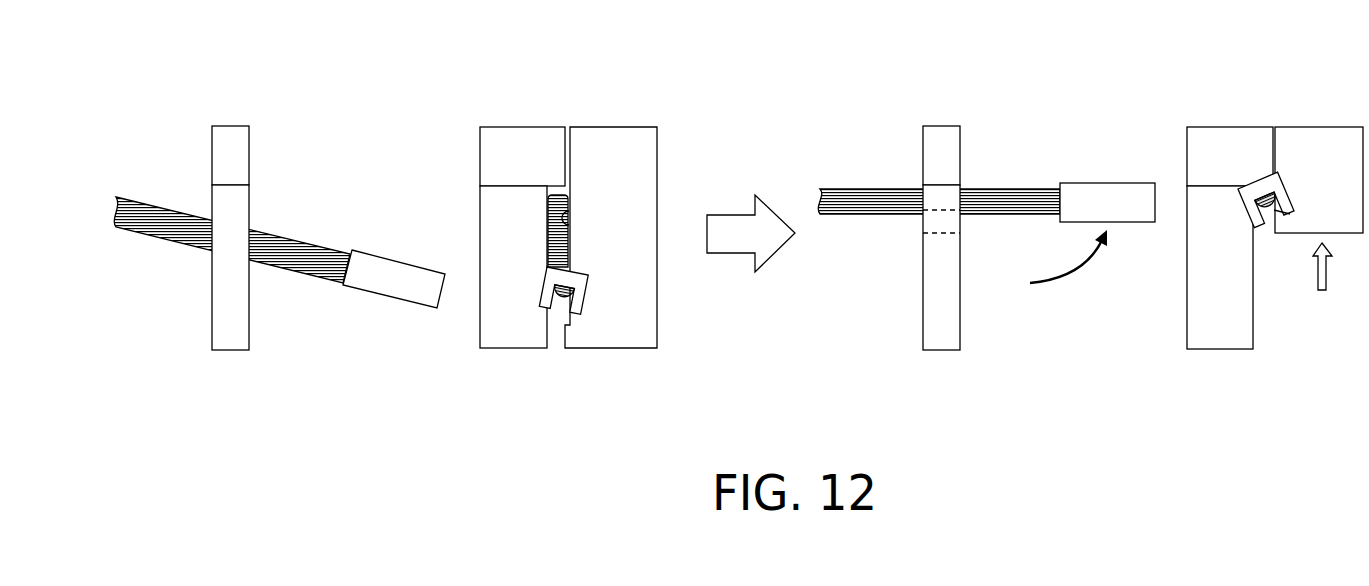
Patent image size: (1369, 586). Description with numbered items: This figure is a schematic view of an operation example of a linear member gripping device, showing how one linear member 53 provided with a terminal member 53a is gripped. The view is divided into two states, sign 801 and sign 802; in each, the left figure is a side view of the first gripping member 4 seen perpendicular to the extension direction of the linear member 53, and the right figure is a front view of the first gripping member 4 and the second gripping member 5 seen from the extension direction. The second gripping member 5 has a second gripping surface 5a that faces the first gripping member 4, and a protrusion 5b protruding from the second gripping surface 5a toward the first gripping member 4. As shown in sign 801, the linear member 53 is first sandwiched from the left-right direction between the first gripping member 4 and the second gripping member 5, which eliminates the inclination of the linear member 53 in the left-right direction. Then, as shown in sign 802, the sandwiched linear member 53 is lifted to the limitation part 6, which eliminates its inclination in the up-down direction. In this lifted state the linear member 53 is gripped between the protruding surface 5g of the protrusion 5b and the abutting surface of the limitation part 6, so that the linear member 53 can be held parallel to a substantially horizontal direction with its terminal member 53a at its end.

The sign 801 is at (166, 95).
The sign 802 is at (850, 95).
The first gripping member 4 is at (217, 328).
The second gripping member 5 is at (613, 130).
The second gripping surface 5a is at (567, 212).
The protrusion 5b is at (933, 222).
The protruding surface 5g is at (1274, 210).
The limitation part 6 is at (233, 131).
The linear member 53 is at (290, 245).
The terminal member 53a is at (388, 265).